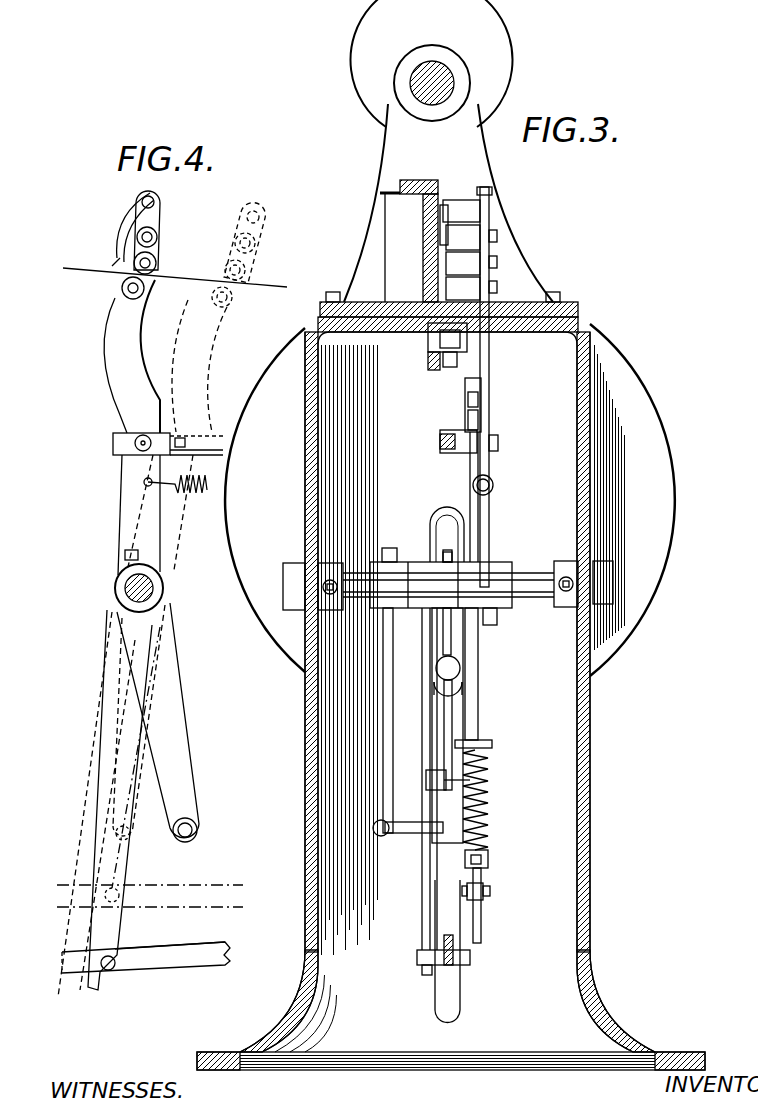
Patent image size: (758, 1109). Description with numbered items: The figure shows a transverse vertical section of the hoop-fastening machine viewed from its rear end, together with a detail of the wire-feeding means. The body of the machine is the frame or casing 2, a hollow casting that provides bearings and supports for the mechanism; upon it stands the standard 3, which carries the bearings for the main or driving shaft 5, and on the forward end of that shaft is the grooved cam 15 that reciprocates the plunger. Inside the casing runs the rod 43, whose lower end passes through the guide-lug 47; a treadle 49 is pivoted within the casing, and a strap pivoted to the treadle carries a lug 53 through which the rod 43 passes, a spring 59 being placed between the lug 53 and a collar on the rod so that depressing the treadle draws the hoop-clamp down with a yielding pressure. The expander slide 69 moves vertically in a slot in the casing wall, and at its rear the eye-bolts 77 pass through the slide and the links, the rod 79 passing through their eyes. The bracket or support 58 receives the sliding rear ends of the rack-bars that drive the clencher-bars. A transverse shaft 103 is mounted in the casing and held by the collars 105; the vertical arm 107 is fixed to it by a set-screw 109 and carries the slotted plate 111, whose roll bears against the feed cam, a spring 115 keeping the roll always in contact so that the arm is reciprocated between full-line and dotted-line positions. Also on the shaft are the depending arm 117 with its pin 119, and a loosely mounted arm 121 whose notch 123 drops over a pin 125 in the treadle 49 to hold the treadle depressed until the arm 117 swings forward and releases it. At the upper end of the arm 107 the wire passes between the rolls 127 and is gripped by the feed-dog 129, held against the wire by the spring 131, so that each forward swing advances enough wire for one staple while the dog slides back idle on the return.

In FIG. 3, the frame or casing 2 is at (588, 760).
In FIG. 3, the standard 3 is at (386, 316).
In FIG. 3, the main or driving shaft 5 is at (443, 62).
In FIG. 3, the grooved cam 15 is at (508, 76).
In FIG. 3, the rod 43 is at (480, 715).
In FIG. 3, the guide-lug 47 is at (491, 892).
In FIG. 3, the treadle 49 is at (460, 976).
In FIG. 4, the treadle 49 is at (146, 957).
In FIG. 3, the lug 53 is at (492, 746).
In FIG. 3, the bracket or support 58 is at (428, 337).
In FIG. 3, the spring 59 is at (485, 805).
In FIG. 3, the slide 69 is at (440, 640).
In FIG. 3, the eye-bolts 77 is at (462, 670).
In FIG. 3, the rod 79 is at (446, 730).
In FIG. 3, the transverse shaft 103 is at (498, 607).
In FIG. 4, the transverse shaft 103 is at (163, 586).
In FIG. 3, the collars 105 is at (325, 575).
In FIG. 3, the vertical arm 107 is at (489, 360).
In FIG. 3, the set-screw 109 is at (490, 625).
In FIG. 3, the slotted plate 111 is at (440, 440).
In FIG. 4, the slotted plate 111 is at (120, 452).
In FIG. 3, the spring 115 is at (493, 486).
In FIG. 4, the spring 115 is at (196, 495).
In FIG. 3, the depending arm 117 is at (380, 735).
In FIG. 4, the depending arm 117 is at (183, 742).
In FIG. 3, the pin 119 is at (390, 835).
In FIG. 4, the pin 119 is at (198, 828).
In FIG. 3, the arm 121 is at (422, 892).
In FIG. 4, the arm 121 is at (122, 877).
In FIG. 4, the notch 123 is at (115, 947).
In FIG. 3, the pin 125 is at (418, 953).
In FIG. 4, the pin 125 is at (110, 972).
In FIG. 3, the rolls 127 is at (450, 290).
In FIG. 4, the rolls 127 is at (156, 263).
In FIG. 3, the feed-dog 129 is at (456, 240).
In FIG. 4, the feed-dog 129 is at (158, 232).
In FIG. 3, the spring 131 is at (450, 220).
In FIG. 4, the spring 131 is at (117, 226).